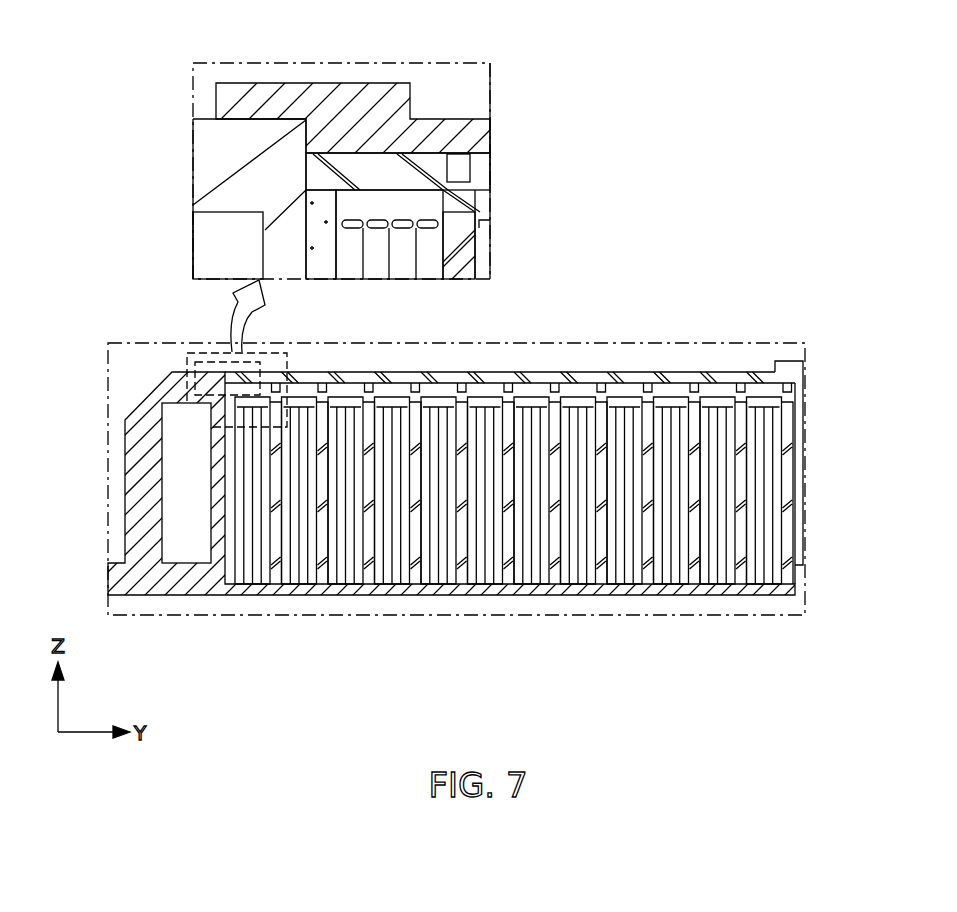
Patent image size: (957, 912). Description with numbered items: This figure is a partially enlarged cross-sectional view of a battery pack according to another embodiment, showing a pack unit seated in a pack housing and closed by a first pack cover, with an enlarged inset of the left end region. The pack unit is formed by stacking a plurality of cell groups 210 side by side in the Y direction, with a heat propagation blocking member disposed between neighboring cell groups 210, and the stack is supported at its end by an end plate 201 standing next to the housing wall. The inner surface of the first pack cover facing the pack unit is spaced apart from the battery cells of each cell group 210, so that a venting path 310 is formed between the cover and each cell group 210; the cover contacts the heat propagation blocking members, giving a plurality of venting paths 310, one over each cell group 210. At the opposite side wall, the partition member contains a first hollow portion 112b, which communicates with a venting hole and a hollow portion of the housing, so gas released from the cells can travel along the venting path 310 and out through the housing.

The first hollow portion 112b is at (801, 538).
The end plate 201 is at (318, 264).
The cell group 210 is at (262, 600).
The venting path 310 is at (397, 197).